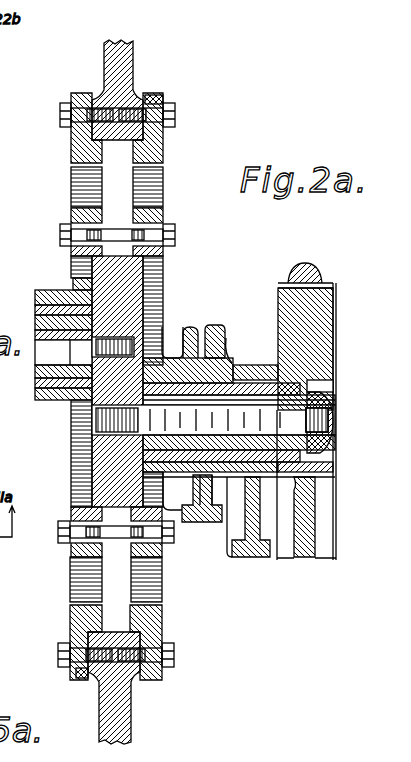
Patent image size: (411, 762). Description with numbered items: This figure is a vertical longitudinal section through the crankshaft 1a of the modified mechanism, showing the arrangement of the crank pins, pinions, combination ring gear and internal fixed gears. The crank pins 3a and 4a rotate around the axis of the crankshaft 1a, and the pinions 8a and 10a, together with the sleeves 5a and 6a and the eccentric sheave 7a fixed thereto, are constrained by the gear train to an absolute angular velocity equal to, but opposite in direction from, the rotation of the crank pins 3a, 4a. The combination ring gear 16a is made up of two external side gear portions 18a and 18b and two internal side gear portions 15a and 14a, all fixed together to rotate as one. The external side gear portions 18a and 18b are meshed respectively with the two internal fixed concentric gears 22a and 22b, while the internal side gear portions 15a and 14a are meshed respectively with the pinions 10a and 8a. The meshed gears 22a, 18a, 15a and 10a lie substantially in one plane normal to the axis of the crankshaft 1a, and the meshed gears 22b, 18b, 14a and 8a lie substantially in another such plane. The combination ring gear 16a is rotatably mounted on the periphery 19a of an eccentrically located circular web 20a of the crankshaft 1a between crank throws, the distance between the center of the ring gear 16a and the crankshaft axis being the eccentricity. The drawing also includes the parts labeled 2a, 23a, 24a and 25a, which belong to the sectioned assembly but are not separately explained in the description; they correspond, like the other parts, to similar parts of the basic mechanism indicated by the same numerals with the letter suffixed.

The crankshaft 1a is at (310, 340).
The housing rim 2a is at (322, 291).
The crank pin 3a is at (200, 355).
The crank pin 4a is at (35, 308).
The sleeve 5a is at (227, 364).
The sleeve 6a is at (45, 292).
The eccentric sheave 7a is at (222, 336).
The pinion 8a is at (162, 350).
The pinion 10a is at (80, 276).
The internal side gear portion 14a is at (162, 250).
The internal side gear portion 15a is at (74, 250).
The combination ring gear 16a is at (163, 219).
The external side gear portion 18a is at (90, 199).
The external side gear portion 18b is at (160, 193).
The periphery 19a is at (160, 283).
The eccentrically located circular web 20a is at (122, 330).
The internal fixed concentric gear 22a is at (82, 166).
The internal fixed concentric gear 22b is at (158, 168).
The shaft 23a is at (122, 58).
The bolt 24a is at (166, 117).
The washer 25a is at (147, 97).